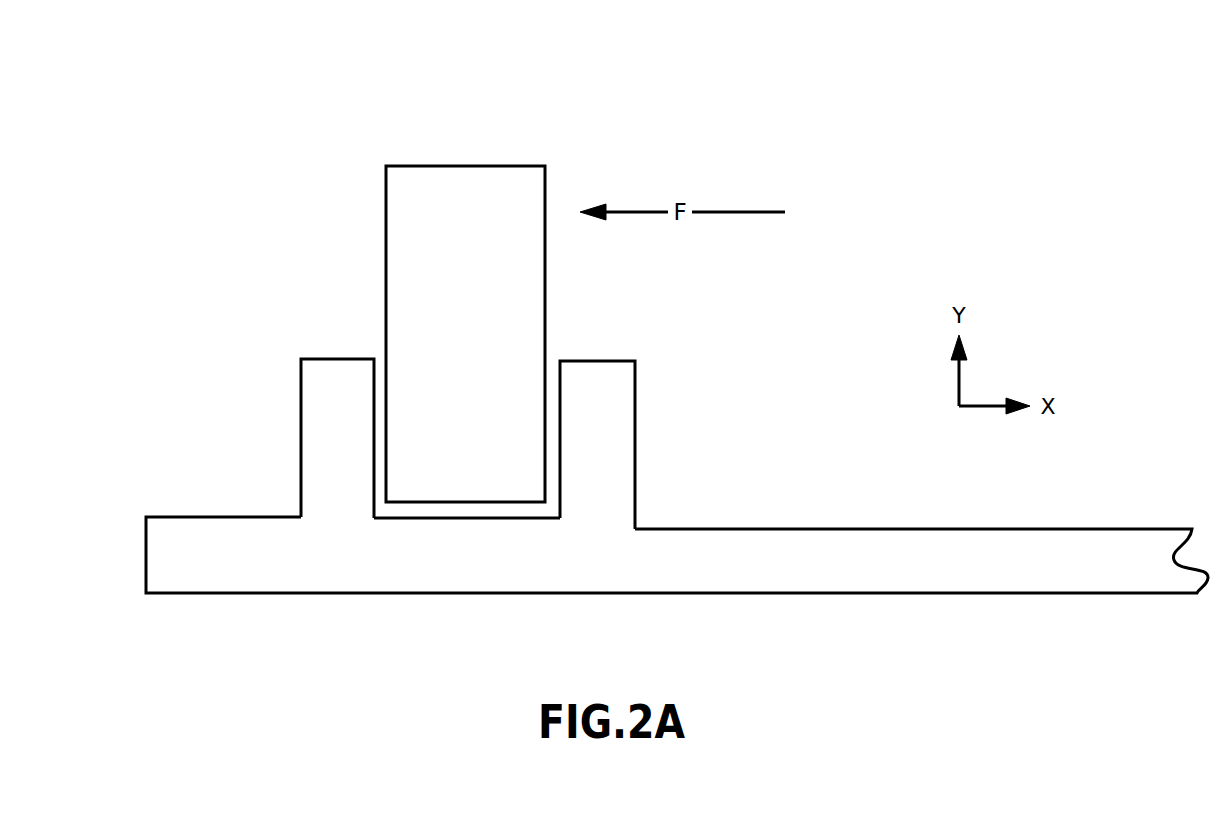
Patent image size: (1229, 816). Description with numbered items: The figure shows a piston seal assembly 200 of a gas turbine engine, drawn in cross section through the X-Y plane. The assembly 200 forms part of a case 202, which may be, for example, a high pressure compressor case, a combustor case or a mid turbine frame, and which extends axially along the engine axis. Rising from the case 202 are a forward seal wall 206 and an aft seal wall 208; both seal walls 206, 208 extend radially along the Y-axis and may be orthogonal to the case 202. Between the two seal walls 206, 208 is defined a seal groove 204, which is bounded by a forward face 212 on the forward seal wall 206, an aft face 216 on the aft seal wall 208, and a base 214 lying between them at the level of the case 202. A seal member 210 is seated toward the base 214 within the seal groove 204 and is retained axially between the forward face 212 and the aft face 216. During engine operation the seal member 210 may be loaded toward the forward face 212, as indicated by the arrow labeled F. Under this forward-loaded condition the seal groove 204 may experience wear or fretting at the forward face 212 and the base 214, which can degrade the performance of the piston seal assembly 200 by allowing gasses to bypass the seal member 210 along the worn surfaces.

The piston seal assembly 200 is at (775, 85).
The case 202 is at (677, 555).
The seal groove 204 is at (572, 323).
The forward seal wall 206 is at (330, 380).
The aft seal wall 208 is at (613, 403).
The seal member 210 is at (465, 334).
The forward face 212 is at (375, 453).
The base 214 is at (470, 518).
The aft face 216 is at (562, 478).